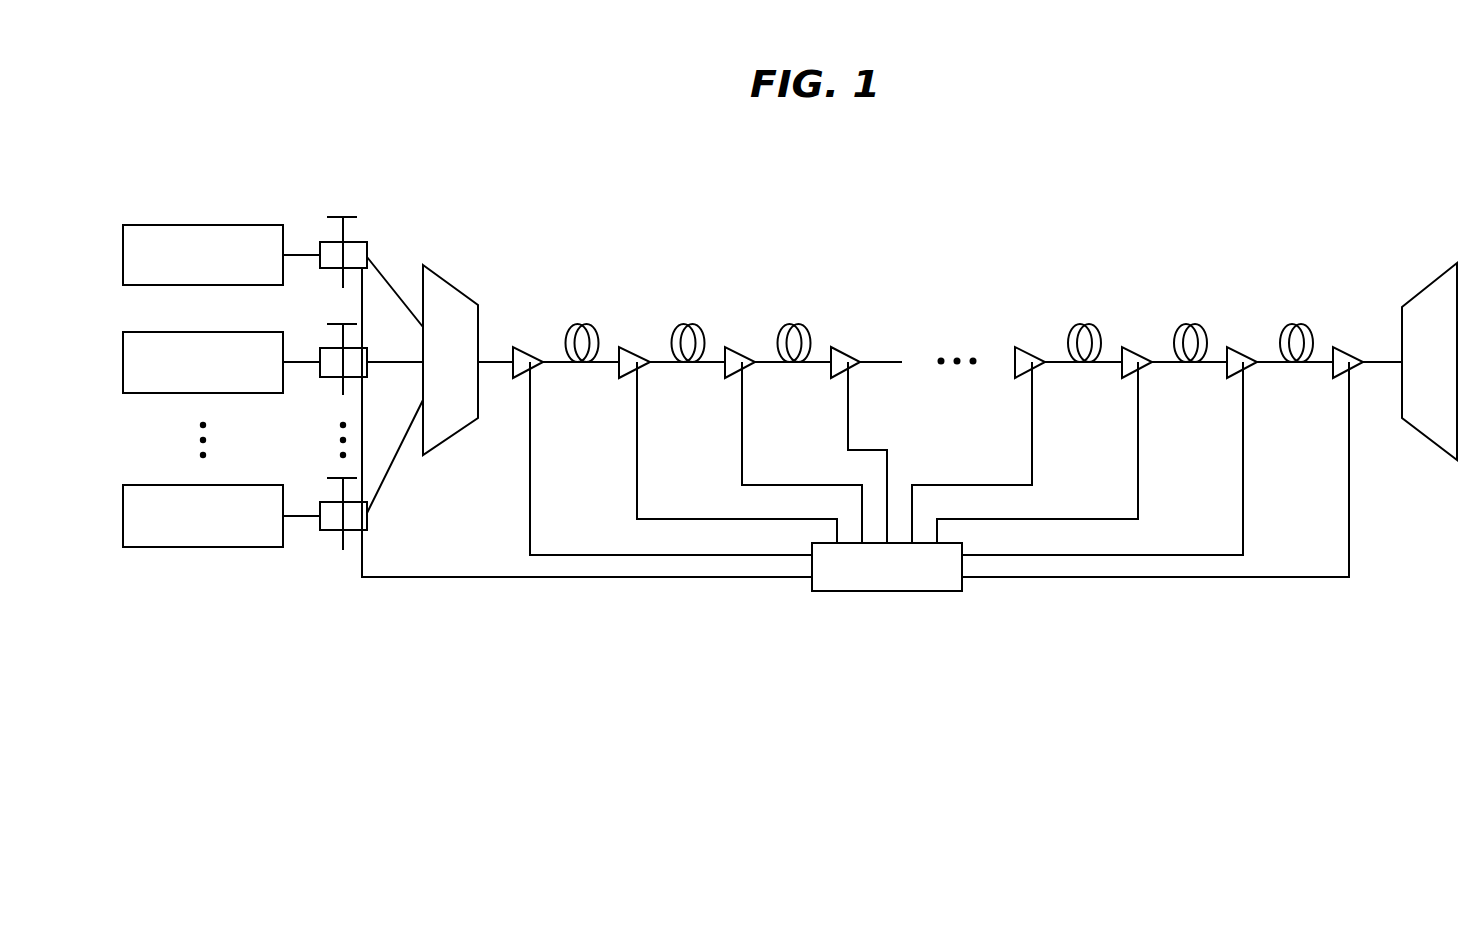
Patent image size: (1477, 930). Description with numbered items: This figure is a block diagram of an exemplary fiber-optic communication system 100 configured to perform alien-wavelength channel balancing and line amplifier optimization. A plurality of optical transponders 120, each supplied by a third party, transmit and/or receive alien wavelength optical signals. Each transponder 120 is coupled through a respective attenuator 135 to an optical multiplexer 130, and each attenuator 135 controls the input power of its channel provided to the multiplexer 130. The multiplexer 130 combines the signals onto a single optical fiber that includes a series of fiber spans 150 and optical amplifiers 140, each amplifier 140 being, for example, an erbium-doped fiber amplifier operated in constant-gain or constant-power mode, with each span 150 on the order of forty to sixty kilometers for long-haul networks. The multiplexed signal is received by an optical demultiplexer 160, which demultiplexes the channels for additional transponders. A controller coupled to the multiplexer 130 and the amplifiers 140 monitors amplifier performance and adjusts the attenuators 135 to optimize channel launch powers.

The fiber-optic communication system 100 is at (916, 238).
The optical transponder 120 is at (204, 224).
The optical multiplexer 130 is at (447, 456).
The attenuator 135 is at (367, 243).
The optical amplifier 140 is at (521, 378).
The fiber span 150 is at (578, 322).
The optical demultiplexer 160 is at (1440, 284).